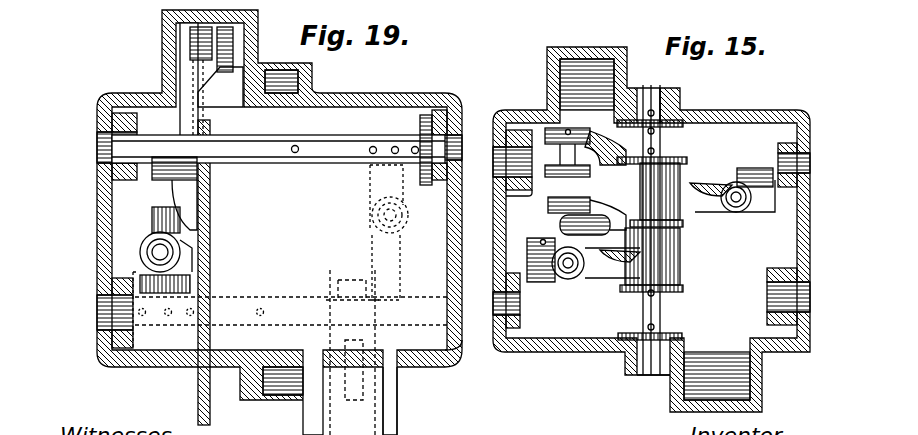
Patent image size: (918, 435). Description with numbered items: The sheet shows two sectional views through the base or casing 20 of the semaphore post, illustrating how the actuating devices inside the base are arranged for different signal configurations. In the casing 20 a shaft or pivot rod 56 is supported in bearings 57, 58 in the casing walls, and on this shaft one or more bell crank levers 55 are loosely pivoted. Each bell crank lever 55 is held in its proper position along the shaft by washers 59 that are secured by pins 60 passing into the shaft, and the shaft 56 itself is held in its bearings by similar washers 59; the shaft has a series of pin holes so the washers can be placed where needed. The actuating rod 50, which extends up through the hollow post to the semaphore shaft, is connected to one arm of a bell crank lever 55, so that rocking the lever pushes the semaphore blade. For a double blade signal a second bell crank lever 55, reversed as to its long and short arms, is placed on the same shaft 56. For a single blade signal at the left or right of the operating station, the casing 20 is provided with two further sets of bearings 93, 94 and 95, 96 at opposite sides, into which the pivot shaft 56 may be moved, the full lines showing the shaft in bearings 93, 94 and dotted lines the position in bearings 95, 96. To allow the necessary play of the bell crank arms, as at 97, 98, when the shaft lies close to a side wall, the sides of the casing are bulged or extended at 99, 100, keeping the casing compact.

In FIG. 19, the base or casing 20 is at (178, 368).
In FIG. 15, the base or casing 20 is at (590, 352).
In FIG. 19, the actuating rod 50 is at (142, 248).
In FIG. 15, the actuating rod 50 is at (738, 214).
In FIG. 19, the bell crank lever 55 is at (150, 181).
In FIG. 15, the bell crank lever 55 is at (640, 190).
In FIG. 19, the shaft or pivot rod 56 is at (325, 165).
In FIG. 15, the shaft or pivot rod 56 is at (680, 141).
In FIG. 19, the bearing 57 is at (300, 64).
In FIG. 15, the bearing 57 is at (665, 90).
In FIG. 15, the bearing 58 is at (655, 375).
In FIG. 19, the washer 59 is at (420, 120).
In FIG. 15, the washer 59 is at (688, 160).
In FIG. 19, the pin 60 is at (290, 154).
In FIG. 15, the pin 60 is at (648, 294).
In FIG. 19, the bearing 93 is at (462, 122).
In FIG. 15, the bearing 93 is at (795, 135).
In FIG. 19, the bearing 94 is at (112, 118).
In FIG. 15, the bearing 94 is at (513, 175).
In FIG. 19, the bearing 95 is at (112, 340).
In FIG. 15, the bearing 95 is at (520, 314).
In FIG. 19, the bearing 96 is at (458, 357).
In FIG. 15, the bearing 96 is at (770, 305).
In FIG. 19, the play of bell crank arm 97 is at (212, 112).
In FIG. 19, the play of bell crank arm 98 is at (397, 386).
In FIG. 19, the bulged side of casing 99 is at (162, 31).
In FIG. 15, the bulged side of casing 99 is at (575, 50).
In FIG. 19, the bulged side of casing 100 is at (381, 352).
In FIG. 15, the bulged side of casing 100 is at (746, 376).